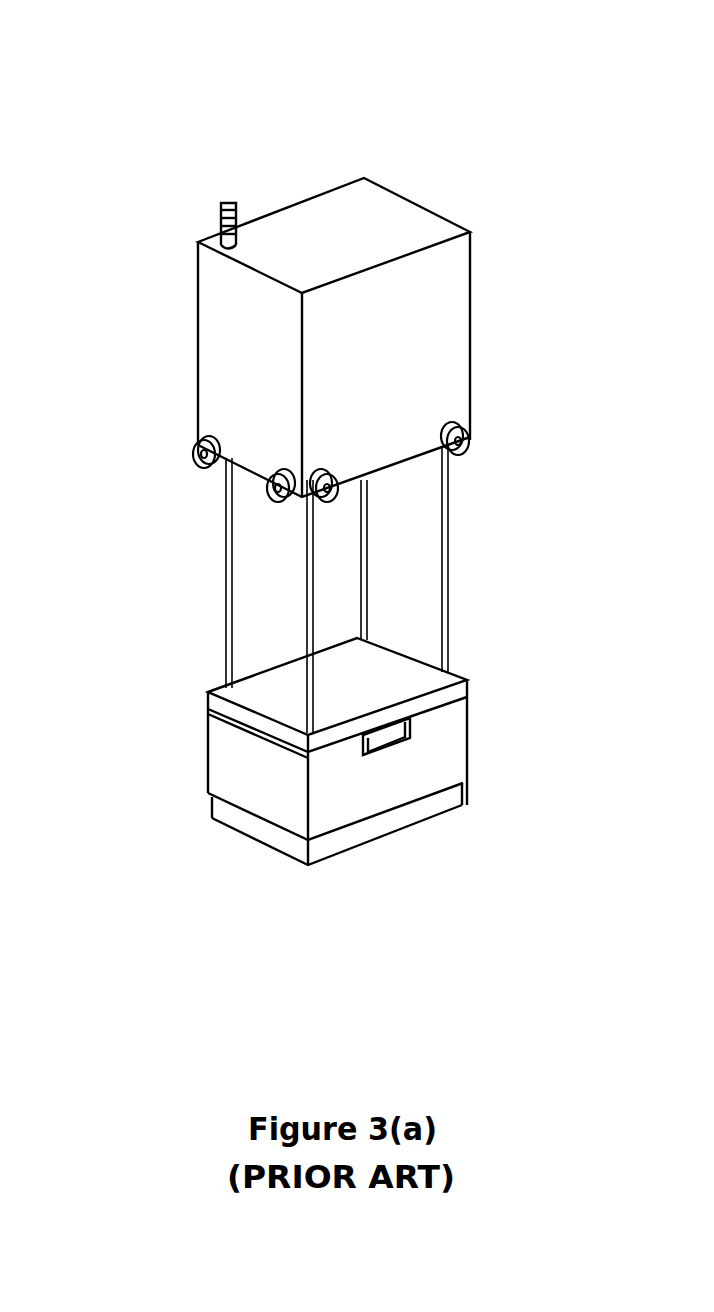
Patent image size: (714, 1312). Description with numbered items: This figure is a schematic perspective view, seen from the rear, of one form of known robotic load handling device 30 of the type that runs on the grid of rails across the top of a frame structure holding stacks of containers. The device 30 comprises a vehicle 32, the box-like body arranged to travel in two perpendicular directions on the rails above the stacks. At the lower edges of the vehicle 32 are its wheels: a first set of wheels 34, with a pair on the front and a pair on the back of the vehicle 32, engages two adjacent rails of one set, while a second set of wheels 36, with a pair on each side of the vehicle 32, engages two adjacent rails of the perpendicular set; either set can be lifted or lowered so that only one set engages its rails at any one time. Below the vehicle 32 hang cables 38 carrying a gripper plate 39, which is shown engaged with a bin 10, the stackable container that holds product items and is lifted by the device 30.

The robotic load handling device 30 is at (166, 134).
The vehicle 32 is at (408, 318).
The first set of wheels 34 is at (468, 443).
The second set of wheels 36 is at (208, 440).
The cable 38 is at (447, 568).
The top plate 39 is at (405, 682).
The bin 10 is at (437, 768).